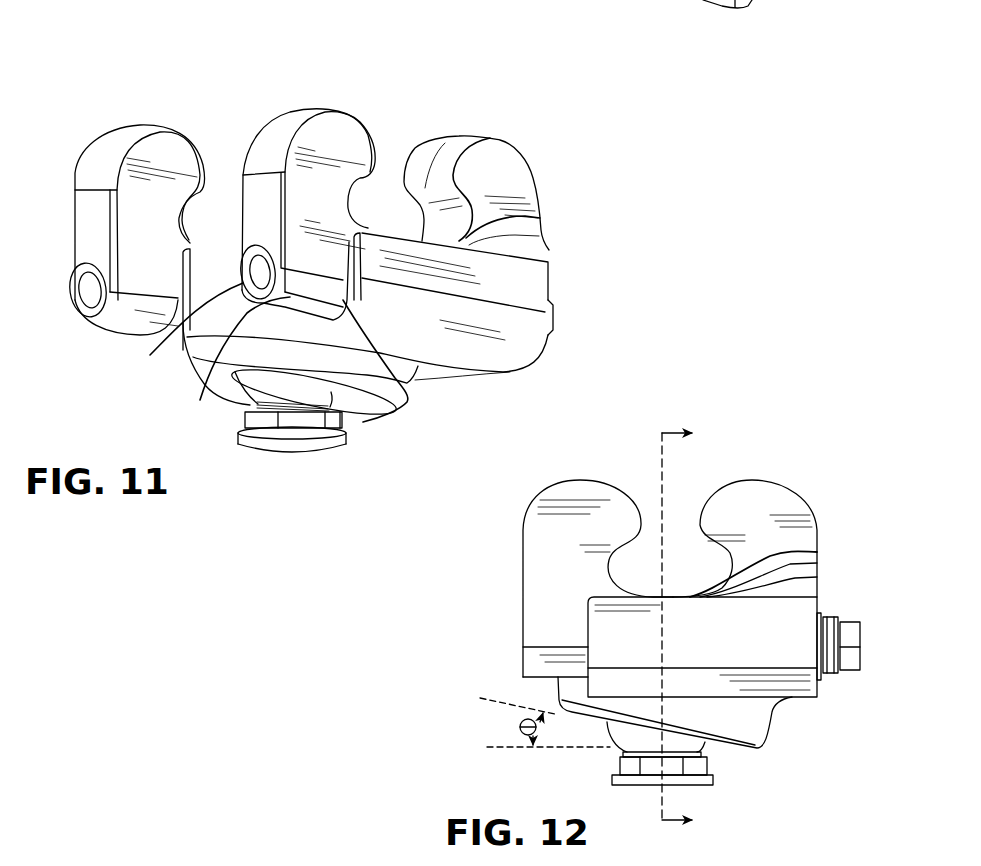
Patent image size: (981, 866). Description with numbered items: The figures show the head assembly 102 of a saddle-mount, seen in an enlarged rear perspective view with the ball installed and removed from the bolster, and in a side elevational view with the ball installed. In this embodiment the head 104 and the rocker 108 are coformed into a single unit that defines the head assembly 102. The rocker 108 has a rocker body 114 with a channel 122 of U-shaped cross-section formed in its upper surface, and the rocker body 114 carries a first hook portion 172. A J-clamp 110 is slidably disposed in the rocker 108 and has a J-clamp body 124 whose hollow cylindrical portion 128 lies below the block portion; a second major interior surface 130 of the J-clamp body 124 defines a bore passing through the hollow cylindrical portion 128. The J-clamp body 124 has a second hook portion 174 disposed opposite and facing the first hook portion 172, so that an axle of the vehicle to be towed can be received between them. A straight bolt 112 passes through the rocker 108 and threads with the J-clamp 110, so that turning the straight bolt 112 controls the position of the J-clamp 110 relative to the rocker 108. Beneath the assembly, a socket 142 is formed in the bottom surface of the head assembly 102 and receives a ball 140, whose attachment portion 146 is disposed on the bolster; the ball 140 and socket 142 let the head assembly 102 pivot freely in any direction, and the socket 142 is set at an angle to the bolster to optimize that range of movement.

In FIG. 11, the head assembly 102 is at (425, 90).
In FIG. 12, the head assembly 102 is at (775, 424).
In FIG. 12, the head 104 is at (773, 713).
In FIG. 11, the rocker 108 is at (416, 231).
In FIG. 12, the rocker 108 is at (731, 567).
In FIG. 11, the J-clamp 110 is at (299, 174).
In FIG. 12, the J-clamp 110 is at (552, 556).
In FIG. 11, the straight bolt 112 is at (553, 330).
In FIG. 12, the straight bolt 112 is at (862, 648).
In FIG. 11, the rocker body 114 is at (416, 231).
In FIG. 12, the rocker body 114 is at (731, 567).
In FIG. 11, the channel 122 is at (413, 401).
In FIG. 11, the J-clamp body 124 is at (299, 174).
In FIG. 12, the J-clamp body 124 is at (552, 556).
In FIG. 11, the hollow cylindrical portion 128 is at (200, 400).
In FIG. 11, the second major interior surface 130 is at (150, 355).
In FIG. 11, the ball 140 is at (341, 413).
In FIG. 12, the ball 140 is at (627, 737).
In FIG. 11, the socket 142 is at (332, 396).
In FIG. 12, the socket 142 is at (607, 723).
In FIG. 11, the attachment portion 146 is at (240, 436).
In FIG. 12, the attachment portion 146 is at (637, 787).
In FIG. 11, the first hook portion 172 is at (495, 130).
In FIG. 12, the first hook portion 172 is at (780, 493).
In FIG. 11, the second hook portion 174 is at (337, 107).
In FIG. 12, the second hook portion 174 is at (597, 493).